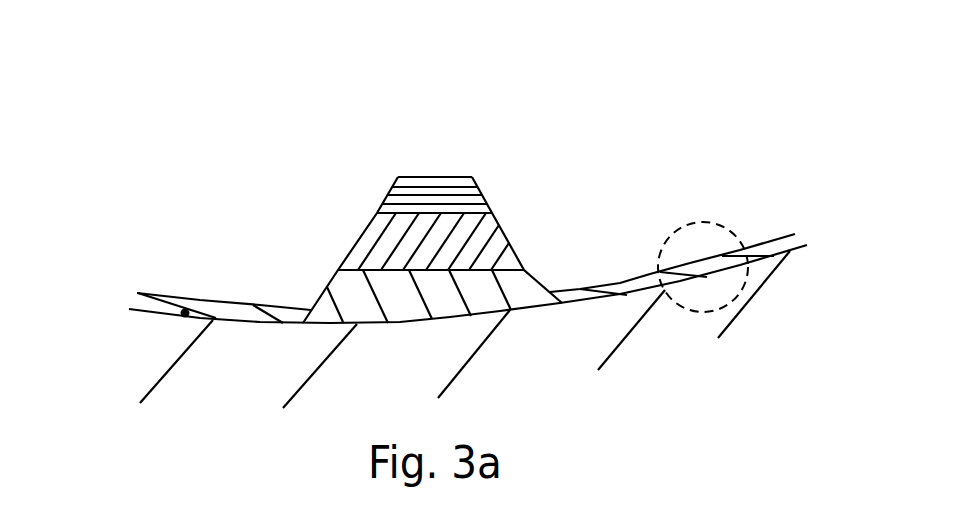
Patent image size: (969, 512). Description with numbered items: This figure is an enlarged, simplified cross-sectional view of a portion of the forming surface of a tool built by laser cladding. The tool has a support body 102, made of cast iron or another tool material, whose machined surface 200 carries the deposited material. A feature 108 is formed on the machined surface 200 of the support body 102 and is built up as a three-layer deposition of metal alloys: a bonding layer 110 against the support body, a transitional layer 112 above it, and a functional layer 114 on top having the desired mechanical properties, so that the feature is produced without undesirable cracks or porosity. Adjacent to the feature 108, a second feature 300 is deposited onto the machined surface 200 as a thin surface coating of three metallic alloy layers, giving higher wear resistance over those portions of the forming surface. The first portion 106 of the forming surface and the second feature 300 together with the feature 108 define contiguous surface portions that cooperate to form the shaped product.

The support body 102 is at (672, 339).
The first portion 106 is at (243, 320).
The feature 108 is at (490, 172).
The bonding layer 110 is at (545, 281).
The transitional layer 112 is at (504, 226).
The functional layer 114 is at (472, 178).
The machined surface 200 is at (186, 311).
The second feature 300 is at (163, 291).